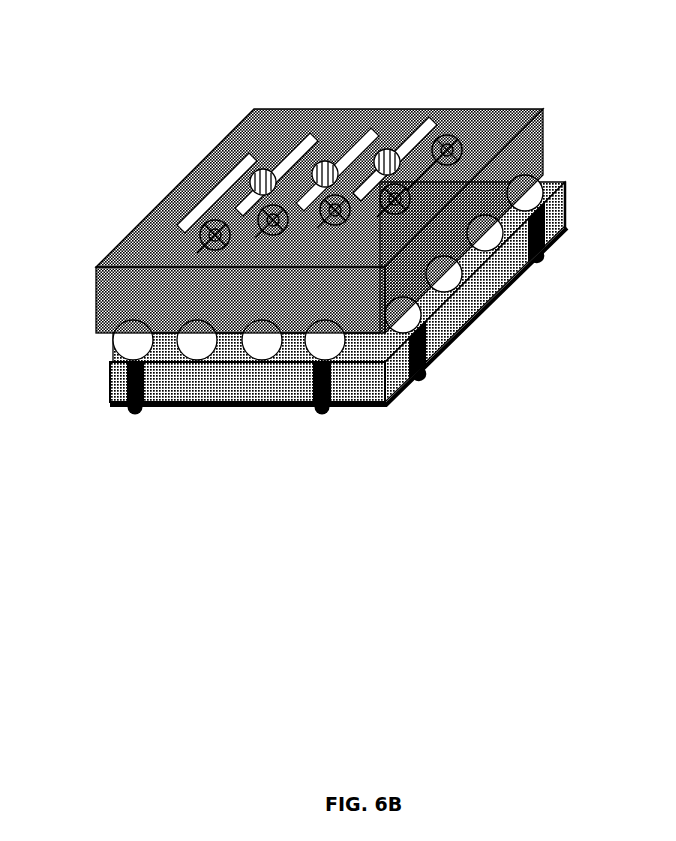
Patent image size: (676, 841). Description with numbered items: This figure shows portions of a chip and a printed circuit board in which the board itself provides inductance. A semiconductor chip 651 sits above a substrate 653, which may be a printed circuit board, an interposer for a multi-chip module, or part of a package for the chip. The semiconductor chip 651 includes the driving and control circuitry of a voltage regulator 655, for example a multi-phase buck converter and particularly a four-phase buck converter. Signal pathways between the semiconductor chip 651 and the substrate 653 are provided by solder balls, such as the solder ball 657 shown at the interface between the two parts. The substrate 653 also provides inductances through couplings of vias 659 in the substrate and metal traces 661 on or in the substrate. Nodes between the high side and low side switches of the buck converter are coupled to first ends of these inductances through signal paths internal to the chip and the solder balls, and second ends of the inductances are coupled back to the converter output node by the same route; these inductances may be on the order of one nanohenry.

The semiconductor chip 651 is at (545, 135).
The substrate 653 is at (567, 203).
The voltage regulator 655 is at (401, 110).
The solder ball 657 is at (524, 267).
The via 659 is at (127, 407).
The metal trace 661 is at (275, 408).